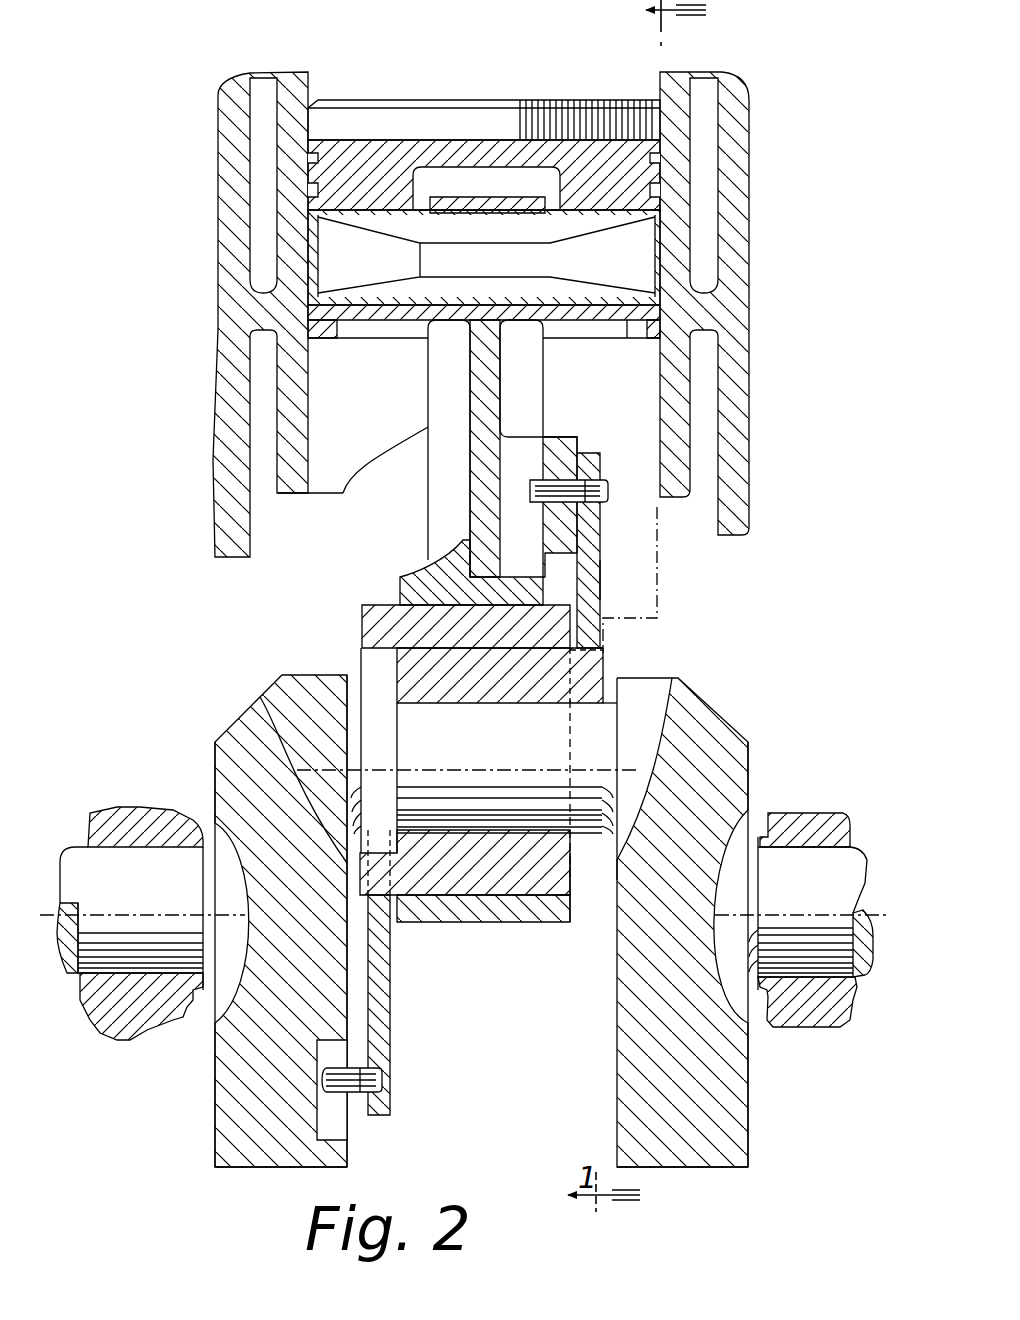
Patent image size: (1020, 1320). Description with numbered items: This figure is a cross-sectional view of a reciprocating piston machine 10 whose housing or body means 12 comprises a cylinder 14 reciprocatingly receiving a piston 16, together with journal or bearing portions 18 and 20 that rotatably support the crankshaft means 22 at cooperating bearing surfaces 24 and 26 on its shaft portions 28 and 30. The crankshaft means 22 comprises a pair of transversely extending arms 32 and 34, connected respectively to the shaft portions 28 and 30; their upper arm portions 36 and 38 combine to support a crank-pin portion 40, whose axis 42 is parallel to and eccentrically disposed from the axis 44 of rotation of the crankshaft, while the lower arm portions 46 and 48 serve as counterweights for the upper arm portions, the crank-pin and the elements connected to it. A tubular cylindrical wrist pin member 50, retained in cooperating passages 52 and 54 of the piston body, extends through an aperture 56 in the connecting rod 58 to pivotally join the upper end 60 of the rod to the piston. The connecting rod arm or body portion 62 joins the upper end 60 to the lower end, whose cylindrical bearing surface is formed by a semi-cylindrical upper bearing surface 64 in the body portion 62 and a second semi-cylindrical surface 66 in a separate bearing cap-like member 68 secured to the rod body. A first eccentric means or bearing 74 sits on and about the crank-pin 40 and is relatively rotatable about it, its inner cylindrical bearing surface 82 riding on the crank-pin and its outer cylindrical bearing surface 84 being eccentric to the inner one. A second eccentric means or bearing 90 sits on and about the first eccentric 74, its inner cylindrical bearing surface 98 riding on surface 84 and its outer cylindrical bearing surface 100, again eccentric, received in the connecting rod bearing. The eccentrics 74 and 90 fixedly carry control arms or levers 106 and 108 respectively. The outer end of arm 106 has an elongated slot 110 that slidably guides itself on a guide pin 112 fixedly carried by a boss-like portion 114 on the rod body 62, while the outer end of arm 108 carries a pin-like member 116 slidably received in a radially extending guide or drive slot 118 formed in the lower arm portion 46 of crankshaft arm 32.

The reciprocating piston machine 10 is at (778, 360).
The machine housing or body means 12 is at (749, 540).
The cylinder 14 is at (308, 397).
The piston 16 is at (396, 118).
The journal or bearing portion 18 is at (140, 818).
The journal or bearing portion 20 is at (786, 1008).
The crankshaft means 22 is at (190, 1045).
The bearing surface 24 is at (140, 948).
The bearing surface 26 is at (840, 962).
The shaft portion 28 is at (68, 975).
The shaft portion 30 is at (862, 962).
The transversely extending arm 32 is at (215, 878).
The transversely extending arm 34 is at (749, 869).
The upper arm portion 36 is at (265, 702).
The upper arm portion 38 is at (705, 698).
The crank-pin portion 40 is at (498, 702).
The axis of crank-pin 42 is at (333, 770).
The axis of rotation 44 is at (838, 913).
The lower arm portion 46 is at (240, 1118).
The lower arm portion 48 is at (735, 1108).
The wrist pin member 50 is at (550, 257).
The passage 52 is at (374, 222).
The passage 54 is at (605, 222).
The aperture 56 is at (470, 220).
The connecting rod 58 is at (546, 370).
The upper end of connecting rod 60 is at (520, 195).
The connecting rod arm or body portion 62 is at (476, 470).
The semi-cylindrical upper bearing surface 64 is at (404, 615).
The second semi-cylindrical bearing surface 66 is at (532, 893).
The bearing cap-like member 68 is at (560, 924).
The first eccentric means or bearing 74 is at (610, 652).
The inner cylindrical bearing surface 82 is at (575, 706).
The outer cylindrical bearing surface 84 is at (616, 854).
The second eccentric means or bearing 90 is at (574, 886).
The inner cylindrical bearing surface 98 is at (447, 855).
The outer cylindrical bearing surface 100 is at (490, 595).
The control arm or lever 106 is at (600, 583).
The control arm or lever 108 is at (380, 981).
The elongated slot 110 is at (587, 522).
The guide pin 112 is at (596, 488).
The boss-like portion 114 is at (562, 452).
The pin-like member 116 is at (378, 1080).
The guide or drive slot 118 is at (338, 1128).